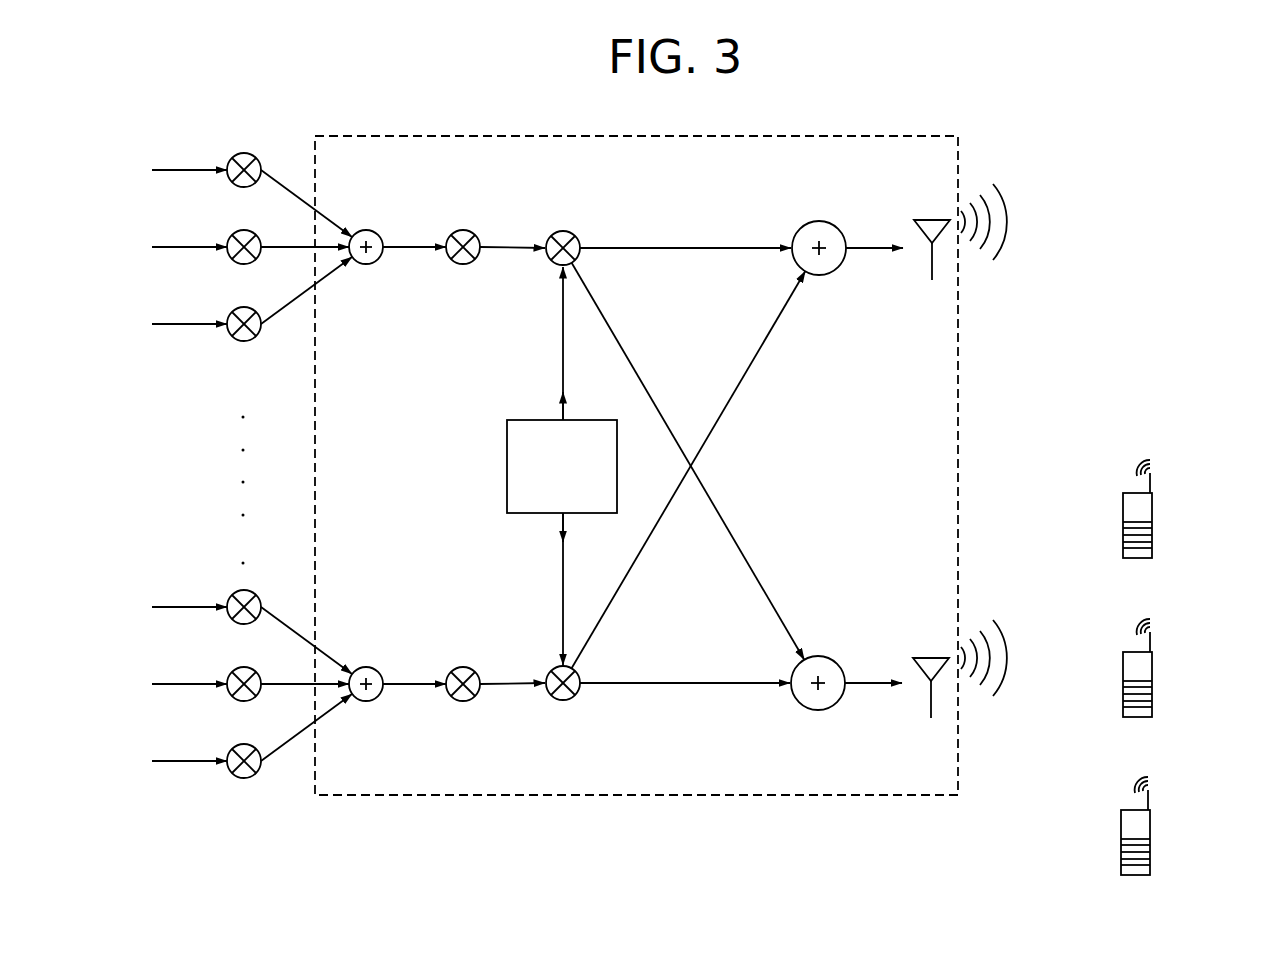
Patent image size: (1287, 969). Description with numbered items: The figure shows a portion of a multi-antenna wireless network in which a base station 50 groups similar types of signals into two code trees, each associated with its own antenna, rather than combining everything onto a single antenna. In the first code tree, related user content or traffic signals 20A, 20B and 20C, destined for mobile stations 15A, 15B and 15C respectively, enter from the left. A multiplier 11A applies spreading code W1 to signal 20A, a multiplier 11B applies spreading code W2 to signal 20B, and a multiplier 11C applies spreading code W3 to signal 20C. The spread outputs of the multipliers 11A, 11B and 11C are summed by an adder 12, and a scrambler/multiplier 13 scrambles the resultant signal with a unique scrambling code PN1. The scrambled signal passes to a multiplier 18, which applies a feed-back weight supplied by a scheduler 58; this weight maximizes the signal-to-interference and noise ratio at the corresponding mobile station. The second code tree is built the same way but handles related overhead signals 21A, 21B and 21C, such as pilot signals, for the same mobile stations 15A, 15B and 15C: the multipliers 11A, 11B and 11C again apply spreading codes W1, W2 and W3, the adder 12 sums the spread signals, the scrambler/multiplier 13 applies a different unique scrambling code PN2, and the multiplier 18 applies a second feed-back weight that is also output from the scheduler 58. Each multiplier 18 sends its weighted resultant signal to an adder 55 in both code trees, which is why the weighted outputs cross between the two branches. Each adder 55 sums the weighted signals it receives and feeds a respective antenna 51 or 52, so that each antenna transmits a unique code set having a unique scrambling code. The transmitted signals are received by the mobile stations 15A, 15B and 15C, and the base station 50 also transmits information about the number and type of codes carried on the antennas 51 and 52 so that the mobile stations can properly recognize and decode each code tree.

The user content/traffic signal 20A is at (188, 155).
The user content/traffic signal 20B is at (188, 232).
The user content/traffic signal 20C is at (188, 309).
The overhead signal 21A is at (188, 592).
The overhead signal 21B is at (188, 669).
The overhead signal 21C is at (188, 746).
The multiplier 11A is at (257, 158).
The multiplier 11B is at (257, 235).
The multiplier 11C is at (256, 336).
The spreading code W1 is at (230, 644).
The spreading code W2 is at (230, 721).
The spreading code W3 is at (230, 798).
The adder 12 is at (367, 264).
The scrambler/multiplier 13 is at (474, 232).
The scrambling code PN1 is at (462, 268).
The scrambling code PN2 is at (462, 705).
The multiplier 18 is at (572, 233).
The scheduler 58 is at (507, 488).
The adder 55 is at (834, 226).
The antenna 51 is at (932, 270).
The antenna 52 is at (931, 705).
The base station 50 is at (958, 760).
The mobile station 15A is at (1152, 511).
The mobile station 15B is at (1152, 670).
The mobile station 15C is at (1150, 828).